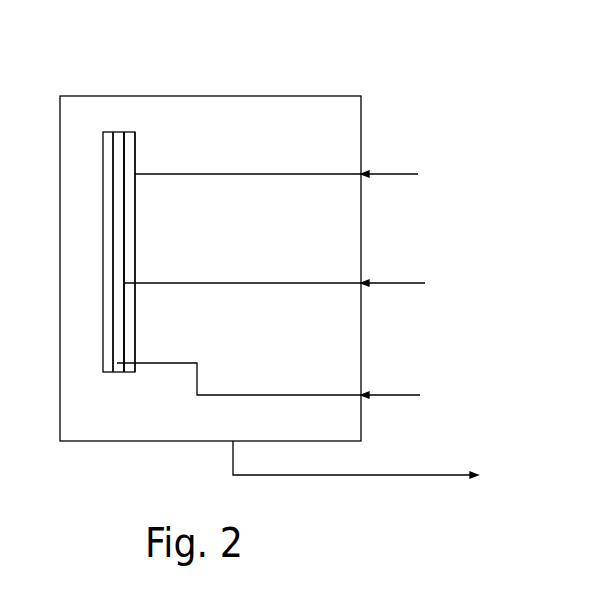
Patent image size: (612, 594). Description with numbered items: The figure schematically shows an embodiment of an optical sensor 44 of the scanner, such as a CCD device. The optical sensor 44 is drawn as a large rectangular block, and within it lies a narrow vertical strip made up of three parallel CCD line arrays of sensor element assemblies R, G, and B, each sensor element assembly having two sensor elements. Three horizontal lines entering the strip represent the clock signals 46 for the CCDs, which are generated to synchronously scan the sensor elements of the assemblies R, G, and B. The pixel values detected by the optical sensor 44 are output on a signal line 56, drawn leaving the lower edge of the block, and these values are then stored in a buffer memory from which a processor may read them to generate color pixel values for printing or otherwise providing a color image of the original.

The optical sensor 44 is at (392, 82).
The clock signals 46 is at (400, 177).
The signal line 56 is at (422, 470).
The sensor element assembly R is at (108, 375).
The sensor element assembly G is at (118, 375).
The sensor element assembly B is at (130, 375).